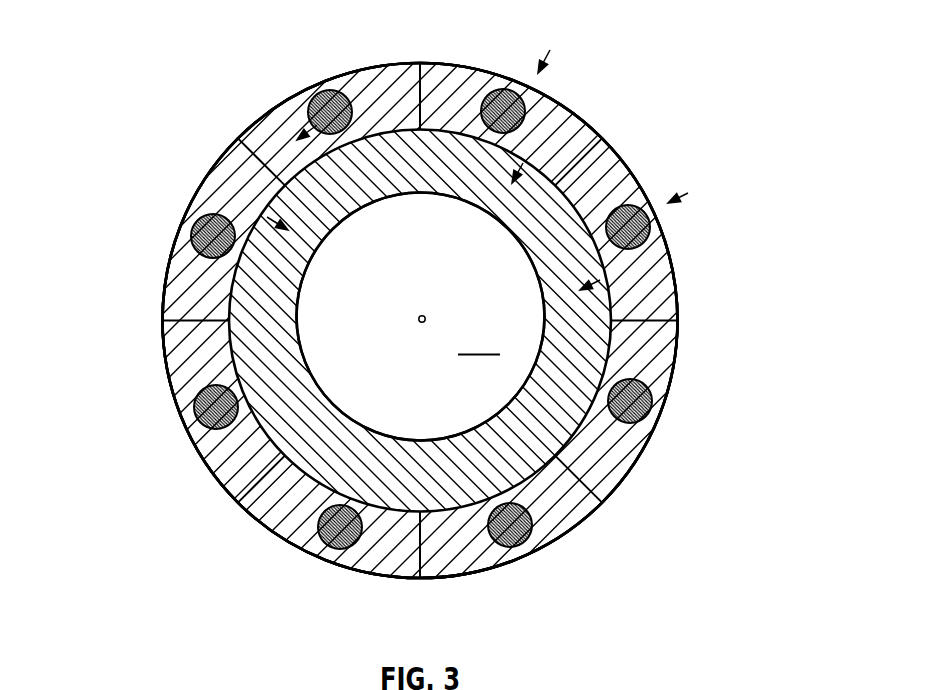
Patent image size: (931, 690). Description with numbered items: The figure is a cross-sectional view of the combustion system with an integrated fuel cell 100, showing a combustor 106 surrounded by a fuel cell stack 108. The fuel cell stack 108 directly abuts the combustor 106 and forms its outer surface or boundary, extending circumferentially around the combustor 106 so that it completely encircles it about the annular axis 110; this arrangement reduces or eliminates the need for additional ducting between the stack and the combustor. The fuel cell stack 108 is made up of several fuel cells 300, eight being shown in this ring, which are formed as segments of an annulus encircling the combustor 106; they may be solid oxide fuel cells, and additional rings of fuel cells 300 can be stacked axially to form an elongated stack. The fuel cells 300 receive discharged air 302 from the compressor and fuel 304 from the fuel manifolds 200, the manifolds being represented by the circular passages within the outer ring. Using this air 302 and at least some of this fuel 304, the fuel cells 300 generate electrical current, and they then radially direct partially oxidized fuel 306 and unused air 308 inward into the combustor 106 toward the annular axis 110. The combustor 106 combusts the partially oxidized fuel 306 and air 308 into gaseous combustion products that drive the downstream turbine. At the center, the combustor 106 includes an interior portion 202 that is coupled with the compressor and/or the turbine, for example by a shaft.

The combustion system with integrated fuel cell 100 is at (713, 30).
The combustor 106 is at (299, 333).
The fuel cell stack 108 is at (602, 541).
The annular axis 110 is at (425, 316).
The fuel manifold 200 is at (202, 395).
The interior portion 202 is at (479, 341).
The fuel cell 300 is at (712, 326).
The discharged air 302 is at (318, 62).
The fuel 304 is at (366, 107).
The partially oxidized fuel 306 is at (390, 154).
The unused air 308 is at (330, 220).